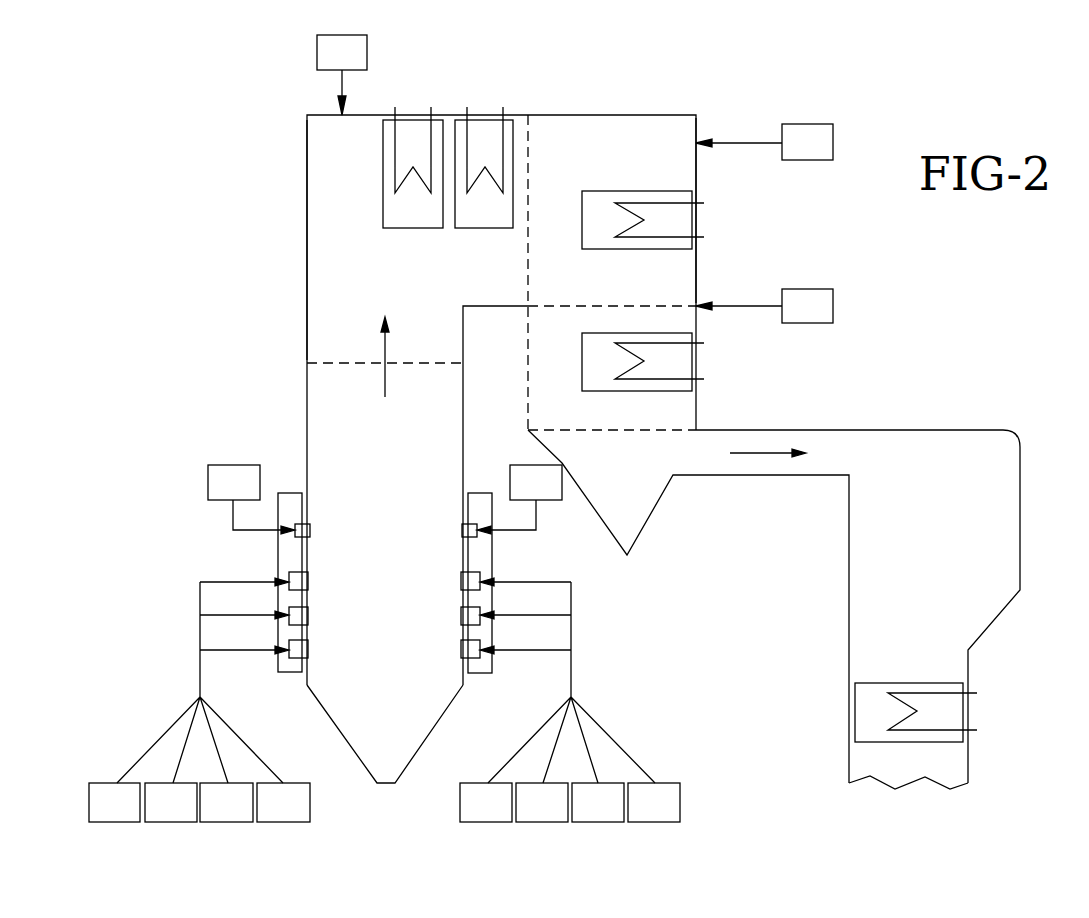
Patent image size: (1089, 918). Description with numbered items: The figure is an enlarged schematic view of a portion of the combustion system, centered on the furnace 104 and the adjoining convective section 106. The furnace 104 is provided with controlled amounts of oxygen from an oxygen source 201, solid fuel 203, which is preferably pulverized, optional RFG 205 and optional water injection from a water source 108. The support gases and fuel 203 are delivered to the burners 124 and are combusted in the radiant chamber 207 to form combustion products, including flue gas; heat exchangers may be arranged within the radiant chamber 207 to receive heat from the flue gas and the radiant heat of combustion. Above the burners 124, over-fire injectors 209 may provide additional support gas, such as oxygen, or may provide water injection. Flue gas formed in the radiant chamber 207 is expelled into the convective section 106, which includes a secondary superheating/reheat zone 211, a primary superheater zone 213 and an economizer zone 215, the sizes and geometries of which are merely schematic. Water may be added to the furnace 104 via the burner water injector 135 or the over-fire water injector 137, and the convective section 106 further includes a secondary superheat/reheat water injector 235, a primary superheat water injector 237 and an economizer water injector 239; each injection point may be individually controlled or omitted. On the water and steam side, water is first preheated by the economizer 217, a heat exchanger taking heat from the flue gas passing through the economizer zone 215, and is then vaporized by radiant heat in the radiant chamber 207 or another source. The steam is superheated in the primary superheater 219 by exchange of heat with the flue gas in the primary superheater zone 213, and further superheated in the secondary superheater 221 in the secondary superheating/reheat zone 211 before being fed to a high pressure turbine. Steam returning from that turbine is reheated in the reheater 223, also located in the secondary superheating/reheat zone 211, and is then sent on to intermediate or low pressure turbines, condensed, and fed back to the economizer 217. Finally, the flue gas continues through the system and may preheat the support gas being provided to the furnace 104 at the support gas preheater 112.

The furnace 104 is at (338, 412).
The convective section 106 is at (543, 148).
The water source 108 is at (461, 428).
The support gas preheater 112 is at (867, 715).
The burners 124 is at (310, 583).
The burner water injector 135 is at (148, 747).
The over-fire water injector 137 is at (255, 532).
The oxygen source 201 is at (328, 802).
The solid fuel 203 is at (384, 802).
The RFG 205 is at (440, 802).
The radiant chamber 207 is at (385, 583).
The over-fire injectors 209 is at (310, 528).
The secondary superheating/reheat zone 211 is at (338, 213).
The primary superheater zone 213 is at (628, 148).
The economizer zone 215 is at (658, 414).
The economizer 217 is at (677, 368).
The primary superheater 219 is at (673, 220).
The secondary superheater 221 is at (408, 132).
The reheater 223 is at (477, 132).
The secondary superheat/reheat water injector 235 is at (340, 81).
The primary superheat water injector 237 is at (745, 141).
The economizer water injector 239 is at (745, 306).